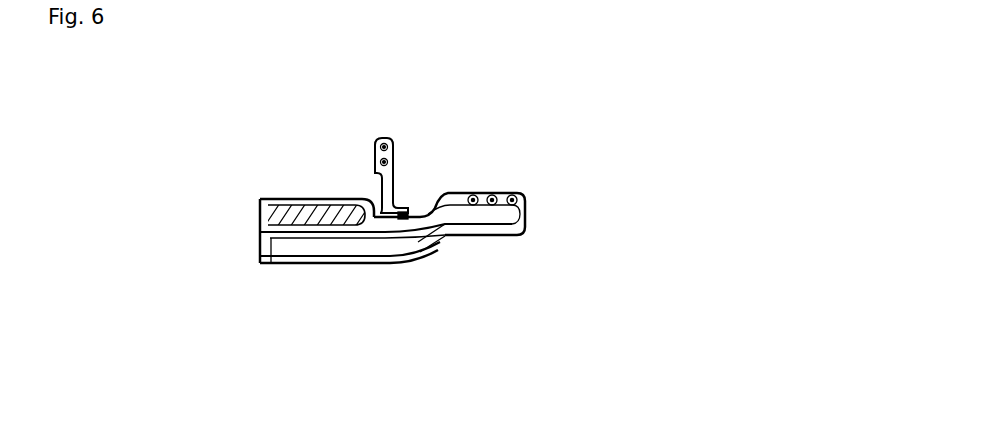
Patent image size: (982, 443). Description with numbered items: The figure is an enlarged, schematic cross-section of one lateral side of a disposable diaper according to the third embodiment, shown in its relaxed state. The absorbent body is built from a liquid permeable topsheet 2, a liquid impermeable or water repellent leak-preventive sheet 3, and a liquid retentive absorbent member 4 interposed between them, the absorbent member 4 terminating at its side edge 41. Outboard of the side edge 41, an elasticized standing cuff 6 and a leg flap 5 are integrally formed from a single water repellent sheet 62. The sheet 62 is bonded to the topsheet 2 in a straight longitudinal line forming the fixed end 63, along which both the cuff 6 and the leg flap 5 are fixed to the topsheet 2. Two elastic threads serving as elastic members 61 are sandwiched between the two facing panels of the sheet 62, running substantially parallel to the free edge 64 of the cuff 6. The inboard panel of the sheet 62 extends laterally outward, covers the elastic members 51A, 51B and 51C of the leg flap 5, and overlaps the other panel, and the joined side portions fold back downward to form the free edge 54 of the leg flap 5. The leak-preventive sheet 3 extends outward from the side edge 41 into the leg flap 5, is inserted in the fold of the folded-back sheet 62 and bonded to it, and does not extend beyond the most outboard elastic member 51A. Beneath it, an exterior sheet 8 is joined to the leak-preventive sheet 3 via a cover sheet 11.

The topsheet 2 is at (327, 198).
The leak-preventive sheet 3 is at (272, 238).
The absorbent member 4 is at (262, 198).
The leg flap 5 is at (489, 179).
The standing cuff 6 is at (359, 134).
The exterior sheet 8 is at (346, 264).
The cover sheet 11 is at (313, 257).
The side edge of the absorbent member 41 is at (366, 228).
The elastic member 51A is at (516, 197).
The elastic member 51B is at (492, 196).
The elastic member 51C is at (466, 198).
The free edge of the leg flap 54 is at (527, 198).
The elastic members of the cuff 61 is at (379, 160).
The water repellent sheet 62 is at (396, 174).
The fixed end 63 is at (404, 214).
The free edge of the cuff 64 is at (382, 141).